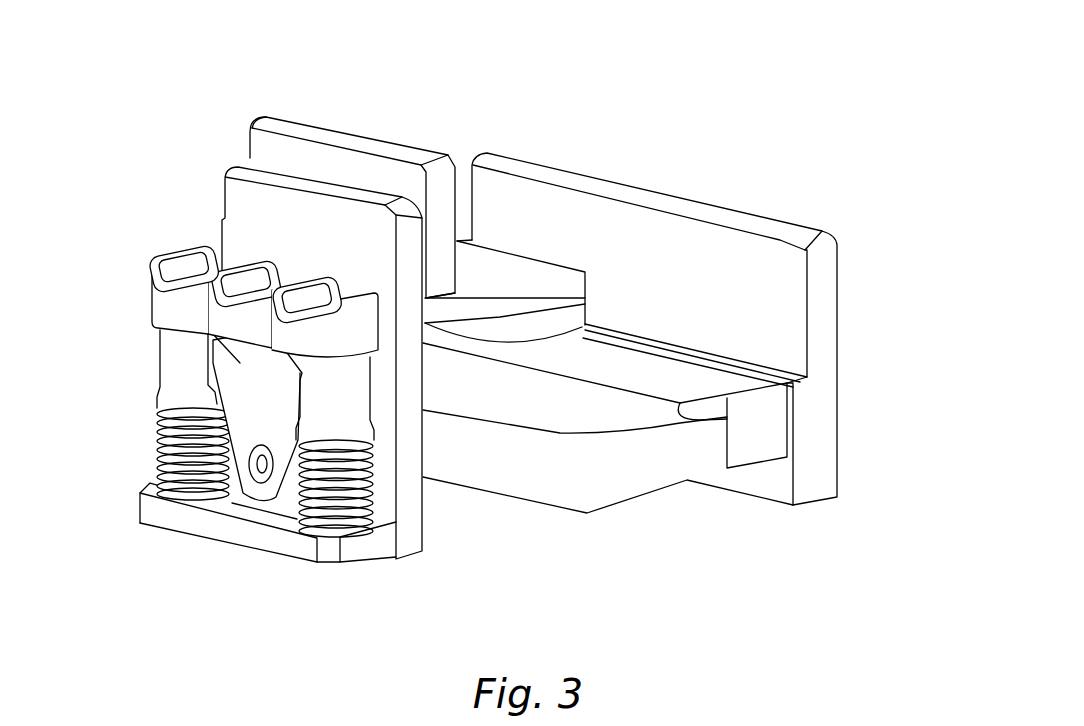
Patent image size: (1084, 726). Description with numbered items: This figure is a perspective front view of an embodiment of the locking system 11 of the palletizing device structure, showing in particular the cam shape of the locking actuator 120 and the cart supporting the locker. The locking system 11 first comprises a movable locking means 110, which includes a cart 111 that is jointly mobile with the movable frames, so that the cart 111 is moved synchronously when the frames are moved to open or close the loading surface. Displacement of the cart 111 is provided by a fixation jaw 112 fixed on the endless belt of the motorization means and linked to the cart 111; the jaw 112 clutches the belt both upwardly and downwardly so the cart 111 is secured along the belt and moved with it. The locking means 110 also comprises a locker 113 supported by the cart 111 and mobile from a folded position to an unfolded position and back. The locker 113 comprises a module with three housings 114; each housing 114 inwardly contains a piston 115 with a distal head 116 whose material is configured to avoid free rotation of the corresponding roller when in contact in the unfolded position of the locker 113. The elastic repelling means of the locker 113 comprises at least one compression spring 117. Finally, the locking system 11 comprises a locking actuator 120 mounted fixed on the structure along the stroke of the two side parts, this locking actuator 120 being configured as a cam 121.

The locking system 11 is at (423, 354).
The locking means 110 is at (460, 312).
The cart 111 is at (408, 510).
The fixation jaw 112 is at (592, 302).
The locker 113 is at (188, 240).
The housing 114 is at (380, 405).
The piston 115 is at (172, 372).
The distal head 116 is at (183, 255).
The compression spring 117 is at (158, 441).
The locking actuator 120 is at (710, 333).
The cam 121 is at (535, 408).